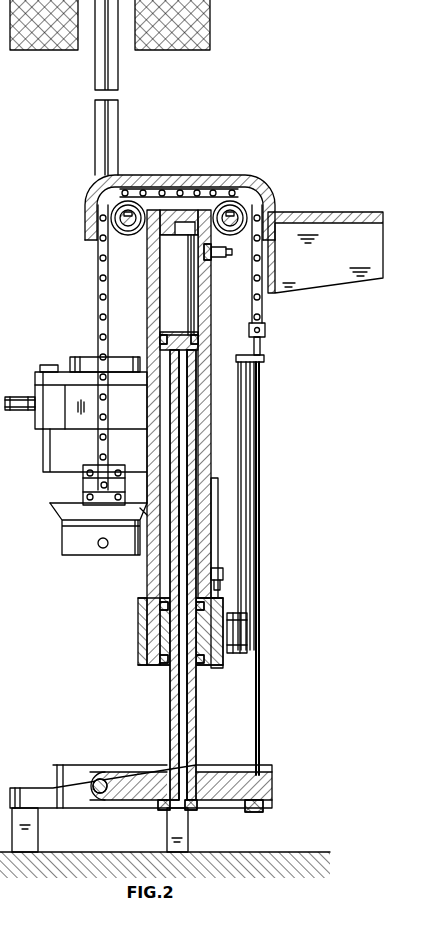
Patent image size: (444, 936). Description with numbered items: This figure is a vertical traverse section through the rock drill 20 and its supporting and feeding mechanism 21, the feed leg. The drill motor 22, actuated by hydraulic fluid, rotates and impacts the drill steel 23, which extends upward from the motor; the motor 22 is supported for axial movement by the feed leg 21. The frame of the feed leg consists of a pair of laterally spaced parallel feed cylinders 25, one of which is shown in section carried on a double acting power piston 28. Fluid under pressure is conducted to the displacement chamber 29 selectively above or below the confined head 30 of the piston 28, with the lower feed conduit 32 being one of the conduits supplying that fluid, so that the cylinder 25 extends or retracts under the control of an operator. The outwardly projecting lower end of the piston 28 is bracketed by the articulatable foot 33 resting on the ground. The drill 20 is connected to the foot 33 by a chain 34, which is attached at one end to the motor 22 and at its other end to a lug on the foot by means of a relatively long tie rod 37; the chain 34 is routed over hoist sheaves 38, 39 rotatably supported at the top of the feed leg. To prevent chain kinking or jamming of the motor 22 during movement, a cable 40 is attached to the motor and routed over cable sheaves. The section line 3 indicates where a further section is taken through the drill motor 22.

The section line 3- 3 is at (103, 307).
The rock drill 20 is at (142, 158).
The supporting and feeding mechanism 21 is at (202, 173).
The drill motor 22 is at (85, 442).
The drill steel 23 is at (112, 118).
The feed cylinder 25 is at (147, 588).
The power piston 28 is at (160, 706).
The displacement chamber 29 is at (179, 280).
The head 30 is at (196, 337).
The lower feed conduit 32 is at (222, 567).
The articulatable foot 33 is at (86, 770).
The chain 34 is at (103, 270).
The tie rod 37 is at (258, 622).
The hoist sheave 38 is at (110, 208).
The hoist sheave 39 is at (238, 205).
The cable 40 is at (232, 513).